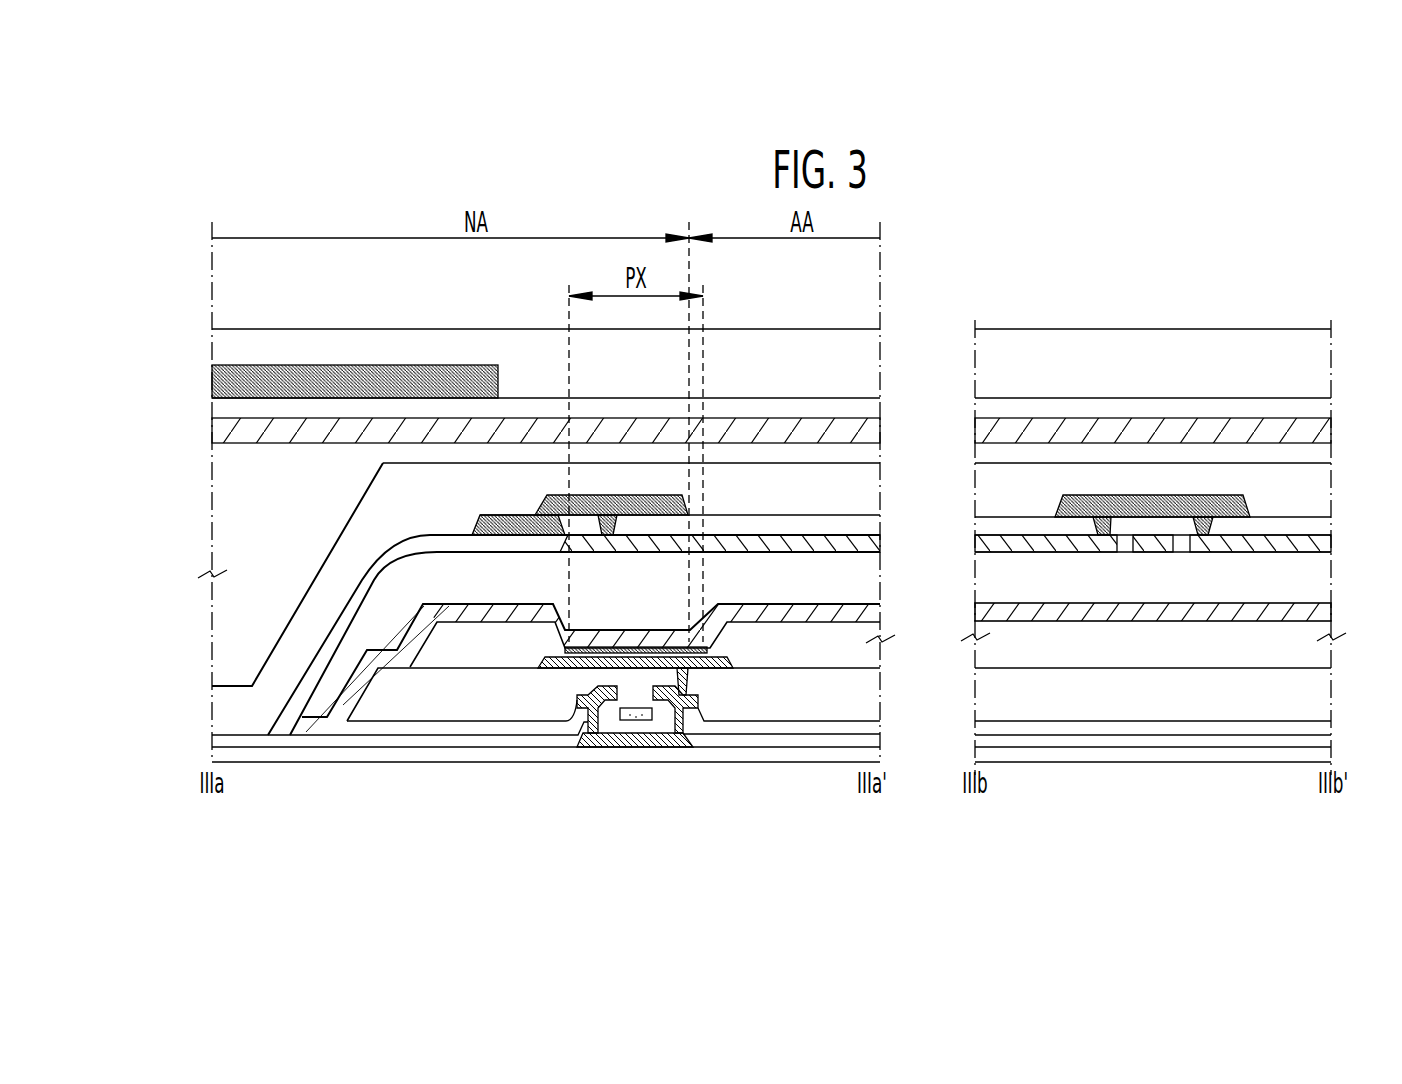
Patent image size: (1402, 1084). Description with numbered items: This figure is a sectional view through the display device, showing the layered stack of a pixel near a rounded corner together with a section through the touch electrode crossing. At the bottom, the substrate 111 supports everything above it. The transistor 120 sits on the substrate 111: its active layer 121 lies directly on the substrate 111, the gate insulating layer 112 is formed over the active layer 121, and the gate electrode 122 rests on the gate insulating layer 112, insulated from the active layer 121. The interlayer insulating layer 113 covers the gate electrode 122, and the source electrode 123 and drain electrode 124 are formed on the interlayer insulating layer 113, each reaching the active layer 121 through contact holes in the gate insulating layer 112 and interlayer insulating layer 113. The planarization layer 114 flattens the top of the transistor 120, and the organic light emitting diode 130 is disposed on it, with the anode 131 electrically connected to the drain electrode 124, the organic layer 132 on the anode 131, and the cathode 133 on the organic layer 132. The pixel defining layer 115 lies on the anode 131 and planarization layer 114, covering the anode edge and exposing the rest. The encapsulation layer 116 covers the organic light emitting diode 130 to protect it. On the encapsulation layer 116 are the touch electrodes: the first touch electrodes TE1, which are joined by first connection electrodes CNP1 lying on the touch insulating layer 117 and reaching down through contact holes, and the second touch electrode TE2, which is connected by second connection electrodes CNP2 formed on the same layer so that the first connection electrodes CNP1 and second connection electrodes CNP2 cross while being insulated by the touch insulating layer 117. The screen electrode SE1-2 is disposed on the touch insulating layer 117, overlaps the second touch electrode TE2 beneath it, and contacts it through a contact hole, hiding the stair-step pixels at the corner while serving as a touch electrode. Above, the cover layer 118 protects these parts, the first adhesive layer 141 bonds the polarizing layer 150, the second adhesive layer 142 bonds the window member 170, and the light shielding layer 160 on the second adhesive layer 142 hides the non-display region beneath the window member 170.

The substrate 111 is at (875, 765).
The gate insulating layer 112 is at (875, 742).
The interlayer insulating layer 113 is at (390, 728).
The planarization layer 114 is at (460, 707).
The pixel defining layer 115 is at (495, 650).
The encapsulation layer 116 is at (321, 710).
The touch insulating layer 117 is at (286, 718).
The cover layer 118 is at (873, 488).
The transistor 120 is at (636, 772).
The active layer 121 is at (622, 743).
The gate electrode 122 is at (643, 720).
The source electrode 123 is at (590, 730).
The drain electrode 124 is at (683, 750).
The organic light emitting diode 130 is at (849, 728).
The anode 131 is at (722, 668).
The organic layer 132 is at (733, 652).
The cathode 133 is at (712, 630).
The first adhesive layer 141 is at (213, 548).
The second adhesive layer 142 is at (213, 408).
The polarizing layer 150 is at (213, 434).
The light shielding layer 160 is at (213, 385).
The window member 170 is at (213, 343).
The (1-2)th screen electrode SE1-2 is at (547, 495).
The first touch electrode TE1 is at (1042, 540).
The second touch electrode TE2 is at (875, 545).
The first connection electrode CNP1 is at (1107, 505).
The second connection electrode CNP2 is at (1173, 545).